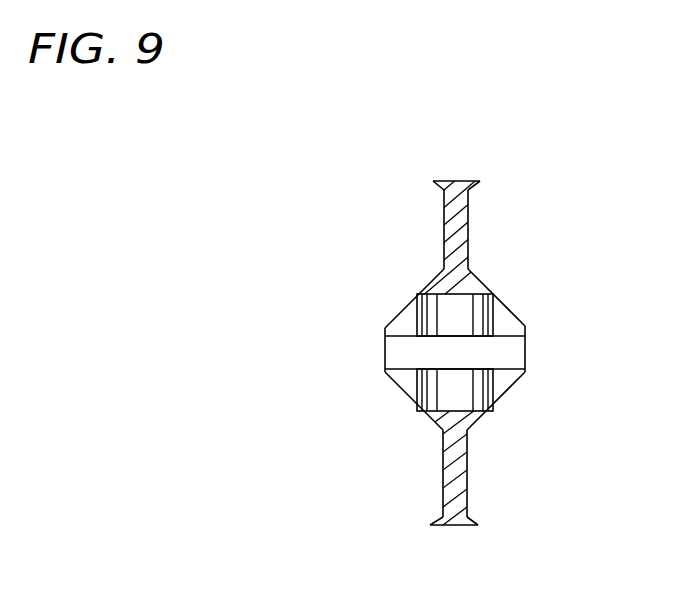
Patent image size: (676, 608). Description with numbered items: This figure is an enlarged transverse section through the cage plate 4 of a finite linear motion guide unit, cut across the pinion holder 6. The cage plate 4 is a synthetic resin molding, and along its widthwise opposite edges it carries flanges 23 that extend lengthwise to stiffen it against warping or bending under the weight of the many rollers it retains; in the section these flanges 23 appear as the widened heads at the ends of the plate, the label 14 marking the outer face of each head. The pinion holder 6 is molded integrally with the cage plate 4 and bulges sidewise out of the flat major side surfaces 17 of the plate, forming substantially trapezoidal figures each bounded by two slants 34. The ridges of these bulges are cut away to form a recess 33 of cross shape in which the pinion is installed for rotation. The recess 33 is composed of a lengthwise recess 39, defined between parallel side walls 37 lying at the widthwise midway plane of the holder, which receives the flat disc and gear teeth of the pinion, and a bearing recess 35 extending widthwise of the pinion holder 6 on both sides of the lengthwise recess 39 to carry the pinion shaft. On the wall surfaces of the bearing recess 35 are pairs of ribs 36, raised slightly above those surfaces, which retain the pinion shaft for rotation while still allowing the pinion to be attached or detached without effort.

The cage plate 4 is at (483, 260).
The pinion holder 6 is at (506, 388).
The screw head 14 is at (455, 181).
The major side surfaces 17 is at (468, 229).
The flanges 23 is at (433, 184).
The recess 33 is at (402, 350).
The slants 34 is at (407, 306).
The bearing recess 35 is at (448, 315).
The ribs 36 is at (427, 315).
The side walls 37 is at (395, 338).
The lengthwise recess 39 is at (513, 356).